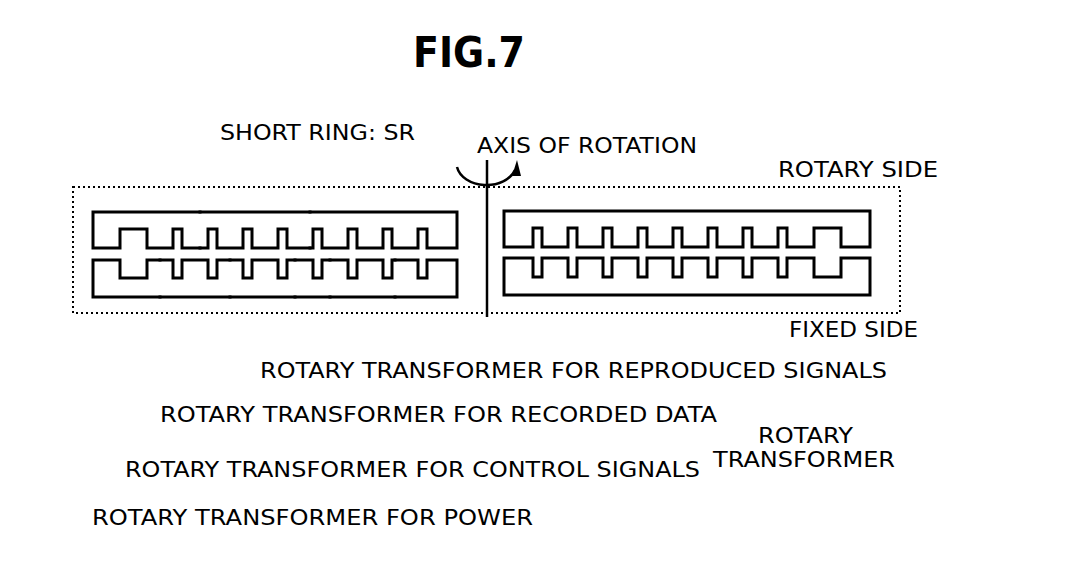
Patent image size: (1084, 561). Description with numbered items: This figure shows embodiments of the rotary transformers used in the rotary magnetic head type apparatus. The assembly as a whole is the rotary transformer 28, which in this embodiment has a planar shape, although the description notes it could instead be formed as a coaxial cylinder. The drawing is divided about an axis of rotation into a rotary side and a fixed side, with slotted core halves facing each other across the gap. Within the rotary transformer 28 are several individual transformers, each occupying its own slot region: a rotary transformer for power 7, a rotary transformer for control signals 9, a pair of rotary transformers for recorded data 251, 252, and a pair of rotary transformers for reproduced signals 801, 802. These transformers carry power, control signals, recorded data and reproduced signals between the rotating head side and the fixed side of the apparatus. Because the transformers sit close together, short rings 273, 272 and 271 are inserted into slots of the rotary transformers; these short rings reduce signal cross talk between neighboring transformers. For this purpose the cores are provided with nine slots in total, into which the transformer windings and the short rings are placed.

The rotary transformer for power 7 is at (137, 268).
The rotary transformer for control signals 9 is at (210, 281).
The rotary transformer 28 is at (770, 313).
The rotary transformer for recorded data 251 is at (314, 287).
The rotary transformer for recorded data 252 is at (278, 286).
The short ring 271 is at (346, 223).
The short ring 272 is at (245, 223).
The short ring 273 is at (165, 223).
The rotary transformer for reproduced signals 801 is at (408, 278).
The rotary transformer for reproduced signals 802 is at (369, 283).